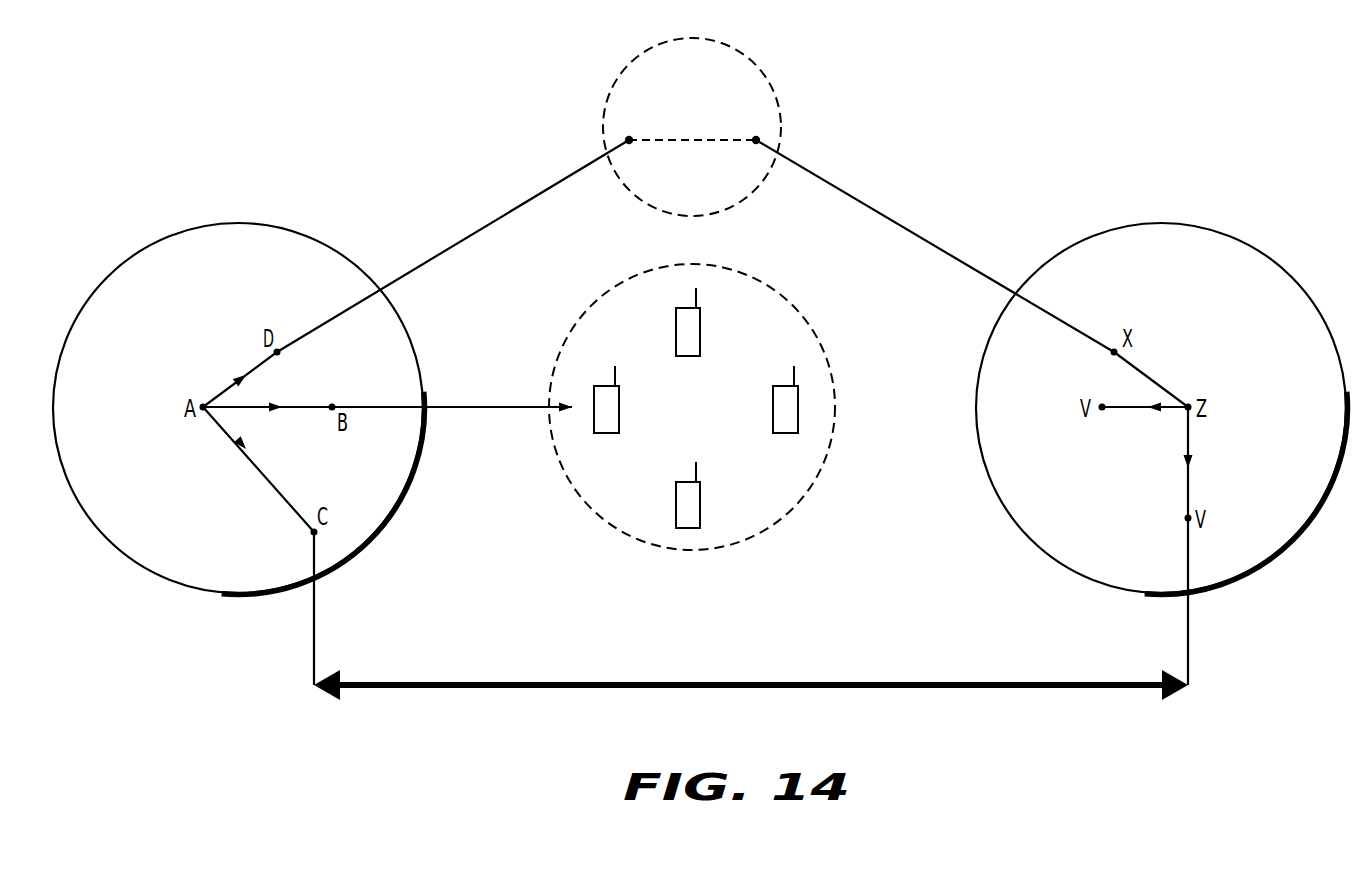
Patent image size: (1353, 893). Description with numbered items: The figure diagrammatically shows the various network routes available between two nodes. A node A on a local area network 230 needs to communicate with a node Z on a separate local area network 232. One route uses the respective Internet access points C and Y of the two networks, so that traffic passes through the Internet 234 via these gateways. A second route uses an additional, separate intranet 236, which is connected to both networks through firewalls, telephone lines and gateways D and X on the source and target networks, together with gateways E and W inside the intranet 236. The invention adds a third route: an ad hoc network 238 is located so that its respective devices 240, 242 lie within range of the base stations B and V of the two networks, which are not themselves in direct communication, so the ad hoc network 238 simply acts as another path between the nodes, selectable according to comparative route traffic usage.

The local area network 230 is at (340, 255).
The local area network 232 is at (1266, 255).
The Internet 234 is at (752, 682).
The intranet 236 is at (768, 82).
The ad hoc network 238 is at (812, 332).
The device 240 is at (620, 425).
The device 242 is at (773, 425).